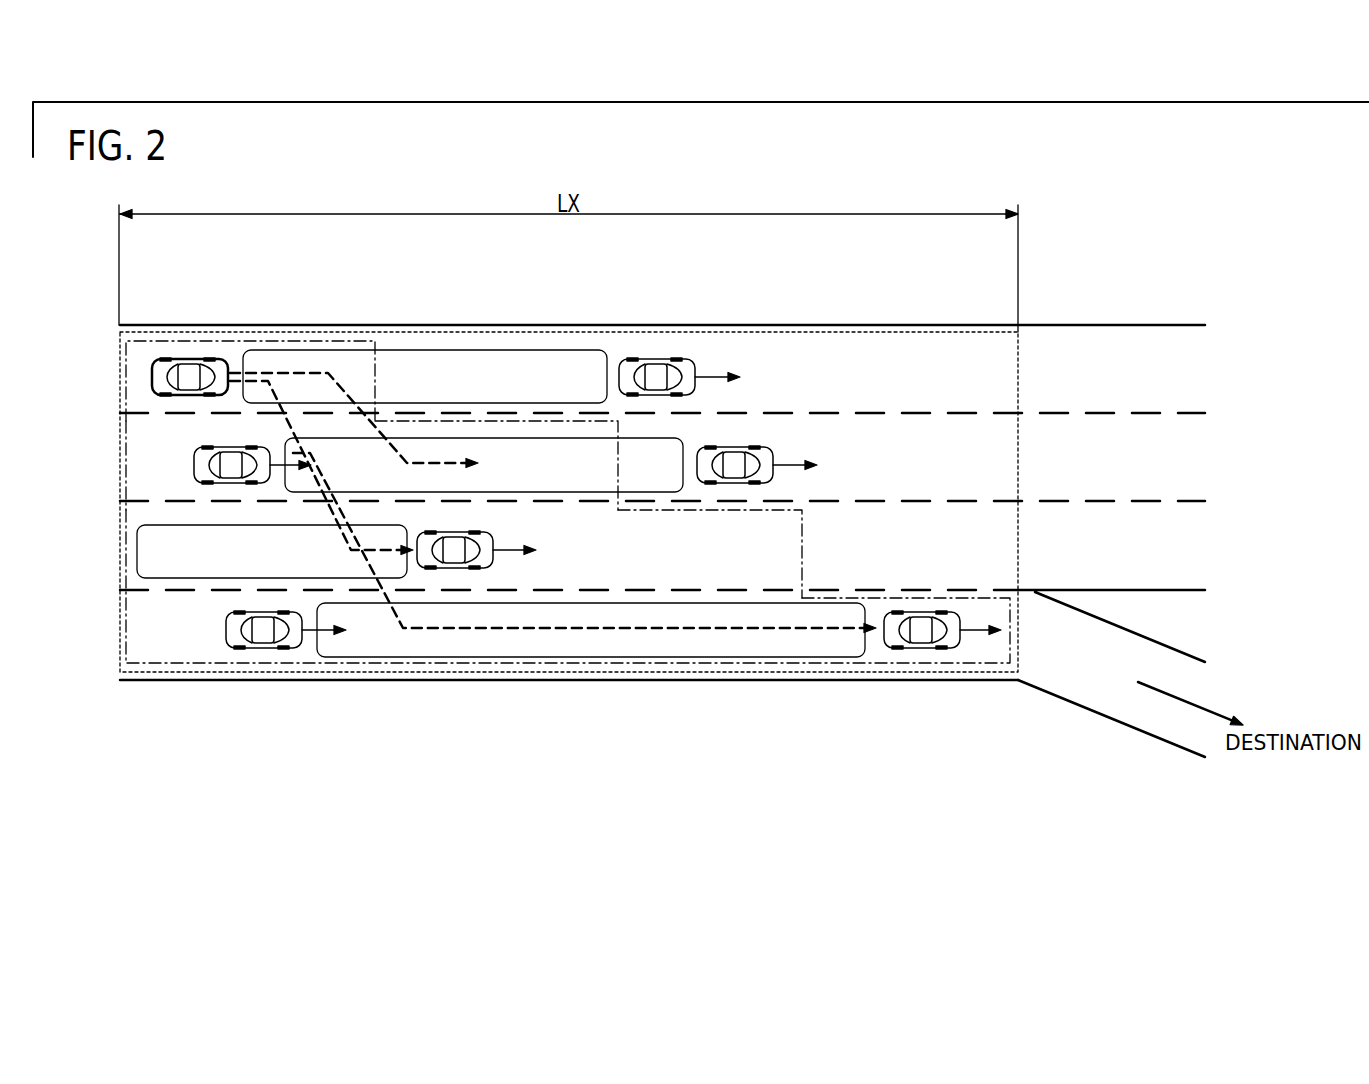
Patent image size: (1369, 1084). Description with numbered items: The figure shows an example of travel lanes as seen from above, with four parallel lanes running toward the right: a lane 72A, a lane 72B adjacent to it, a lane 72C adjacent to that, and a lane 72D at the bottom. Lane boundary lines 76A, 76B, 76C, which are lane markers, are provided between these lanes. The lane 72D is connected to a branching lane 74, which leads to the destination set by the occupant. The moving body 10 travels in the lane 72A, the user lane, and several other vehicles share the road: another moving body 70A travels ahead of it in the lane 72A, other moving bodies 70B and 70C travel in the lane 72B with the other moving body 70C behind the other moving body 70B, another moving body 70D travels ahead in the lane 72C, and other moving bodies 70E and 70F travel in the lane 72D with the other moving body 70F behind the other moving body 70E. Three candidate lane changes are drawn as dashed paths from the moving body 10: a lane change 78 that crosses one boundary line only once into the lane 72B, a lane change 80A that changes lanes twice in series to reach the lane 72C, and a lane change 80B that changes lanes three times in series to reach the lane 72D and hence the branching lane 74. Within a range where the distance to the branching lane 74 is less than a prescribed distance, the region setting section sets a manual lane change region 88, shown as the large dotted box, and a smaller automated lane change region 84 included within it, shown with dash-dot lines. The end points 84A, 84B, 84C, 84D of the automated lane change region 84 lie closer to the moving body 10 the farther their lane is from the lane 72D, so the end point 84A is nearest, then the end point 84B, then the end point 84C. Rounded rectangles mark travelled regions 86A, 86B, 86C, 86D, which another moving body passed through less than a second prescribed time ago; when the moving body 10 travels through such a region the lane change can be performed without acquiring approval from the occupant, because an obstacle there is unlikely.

The moving body 10 is at (185, 357).
The lane 72A is at (135, 372).
The lane 72B is at (135, 451).
The lane 72C is at (140, 513).
The lane 72D is at (135, 616).
The lane boundary line 76A is at (137, 413).
The lane boundary line 76B is at (137, 501).
The lane boundary line 76C is at (137, 590).
The branching lane 74 is at (1093, 688).
The manual lane change region 88 is at (1018, 538).
The end point of the automated lane change region 84A is at (375, 375).
The end point of the automated lane change region 84B is at (618, 465).
The end point of the automated lane change region 84C is at (802, 552).
The end point of the automated lane change region 84D is at (1008, 638).
The automated lane change region 84 is at (540, 658).
The travelled region 86A is at (585, 350).
The travelled region 86B is at (645, 492).
The travelled region 86C is at (365, 578).
The travelled region 86D is at (345, 658).
The lane change 78 is at (442, 466).
The lane change 80A is at (403, 548).
The lane change 80B is at (807, 630).
The other moving body 70A is at (690, 366).
The other moving body 70B is at (765, 453).
The other moving body 70C is at (212, 447).
The other moving body 70D is at (466, 535).
The other moving body 70E is at (918, 637).
The other moving body 70F is at (226, 633).